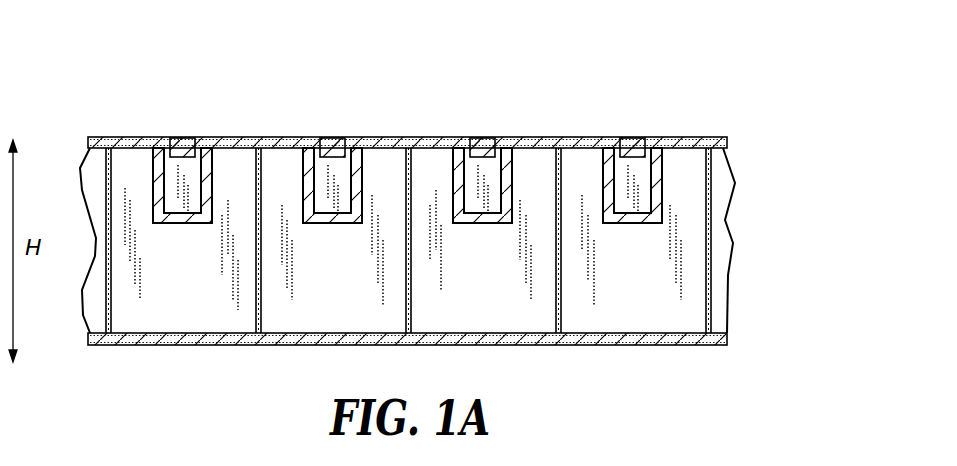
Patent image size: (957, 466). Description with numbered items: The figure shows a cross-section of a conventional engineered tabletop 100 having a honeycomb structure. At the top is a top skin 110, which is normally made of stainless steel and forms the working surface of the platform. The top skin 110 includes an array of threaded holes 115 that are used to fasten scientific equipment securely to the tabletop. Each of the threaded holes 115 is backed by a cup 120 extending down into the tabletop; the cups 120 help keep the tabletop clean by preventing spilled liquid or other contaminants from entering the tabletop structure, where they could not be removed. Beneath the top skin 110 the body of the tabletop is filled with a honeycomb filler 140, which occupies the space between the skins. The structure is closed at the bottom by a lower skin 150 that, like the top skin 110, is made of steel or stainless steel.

The engineered tabletop 100 is at (693, 57).
The top skin 110 is at (147, 138).
The threaded holes 115 is at (182, 138).
The cups 120 is at (450, 187).
The honeycomb filler 140 is at (712, 221).
The lower skin 150 is at (135, 342).